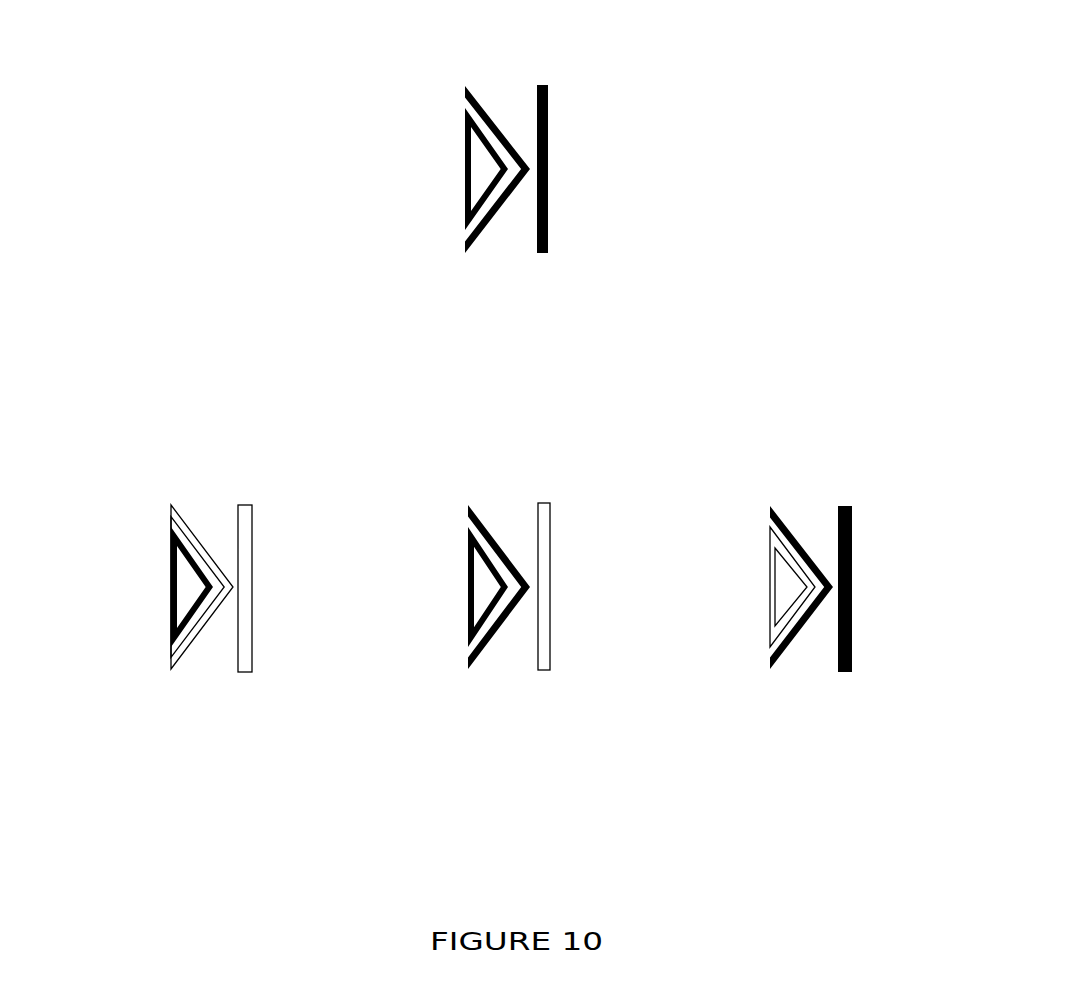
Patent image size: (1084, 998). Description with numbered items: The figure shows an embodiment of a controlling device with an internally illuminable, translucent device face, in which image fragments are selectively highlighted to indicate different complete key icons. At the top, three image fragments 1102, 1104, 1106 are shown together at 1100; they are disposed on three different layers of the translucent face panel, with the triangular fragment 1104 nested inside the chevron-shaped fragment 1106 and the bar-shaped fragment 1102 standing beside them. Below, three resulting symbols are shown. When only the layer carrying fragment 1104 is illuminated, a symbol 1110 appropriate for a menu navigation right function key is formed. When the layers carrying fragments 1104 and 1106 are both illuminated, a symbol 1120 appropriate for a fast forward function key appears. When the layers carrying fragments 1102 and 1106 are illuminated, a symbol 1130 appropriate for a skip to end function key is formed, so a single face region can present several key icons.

The image fragments shown together 1100 is at (662, 56).
The image fragment 1102 is at (549, 177).
The image fragment 1104 is at (462, 169).
The image fragment 1106 is at (502, 218).
The symbol for menu navigation right function key 1110 is at (206, 796).
The symbol for fast forward function key 1120 is at (545, 796).
The symbol for skip to end function key 1130 is at (862, 796).